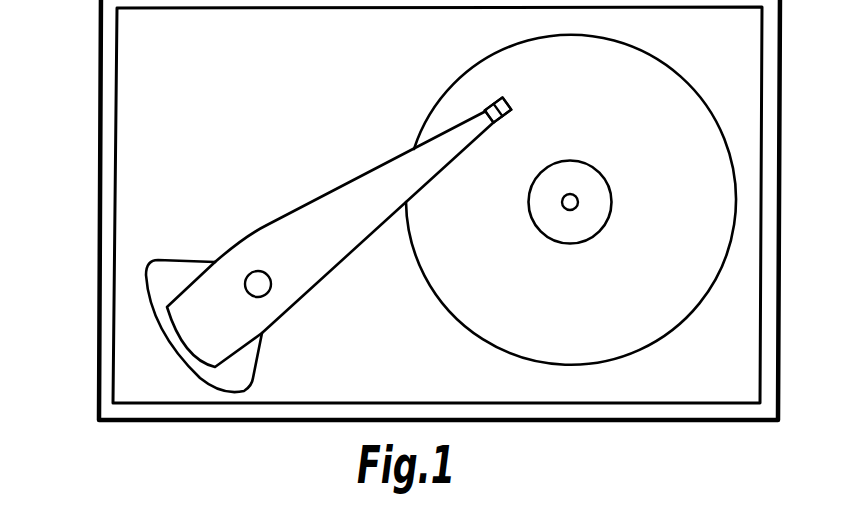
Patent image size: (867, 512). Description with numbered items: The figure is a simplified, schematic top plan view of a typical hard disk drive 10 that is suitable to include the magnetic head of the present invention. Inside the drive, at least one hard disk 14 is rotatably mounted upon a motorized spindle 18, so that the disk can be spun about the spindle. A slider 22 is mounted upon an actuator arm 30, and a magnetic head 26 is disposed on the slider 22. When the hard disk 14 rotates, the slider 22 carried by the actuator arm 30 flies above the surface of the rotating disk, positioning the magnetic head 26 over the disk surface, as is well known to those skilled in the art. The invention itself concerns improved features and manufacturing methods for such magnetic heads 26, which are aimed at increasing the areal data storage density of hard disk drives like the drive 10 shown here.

The hard disk drive 10 is at (100, 49).
The hard disk 14 is at (475, 320).
The motorized spindle 18 is at (610, 201).
The slider 22 is at (501, 123).
The magnetic head 26 is at (511, 108).
The actuator arm 30 is at (317, 201).